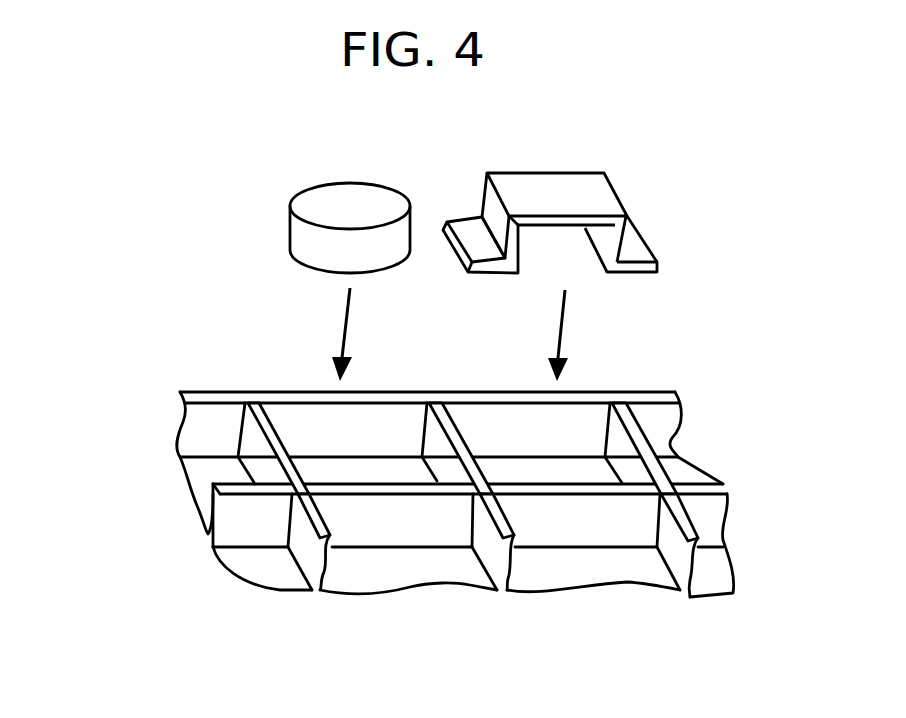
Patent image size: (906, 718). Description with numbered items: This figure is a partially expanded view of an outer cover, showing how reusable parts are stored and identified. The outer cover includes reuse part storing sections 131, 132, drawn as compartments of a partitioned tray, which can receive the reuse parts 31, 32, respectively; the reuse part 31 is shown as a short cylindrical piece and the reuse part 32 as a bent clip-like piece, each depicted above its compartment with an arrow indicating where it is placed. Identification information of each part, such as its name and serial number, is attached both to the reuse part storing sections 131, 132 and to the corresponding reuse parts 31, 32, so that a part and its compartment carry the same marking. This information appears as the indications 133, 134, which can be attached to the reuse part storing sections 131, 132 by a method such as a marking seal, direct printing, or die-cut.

The reuse part 31 is at (352, 182).
The reuse part 32 is at (548, 173).
The reuse part storing section 131 is at (308, 465).
The reuse part storing section 132 is at (582, 470).
The indication 133 is at (286, 415).
The indication 134 is at (468, 424).